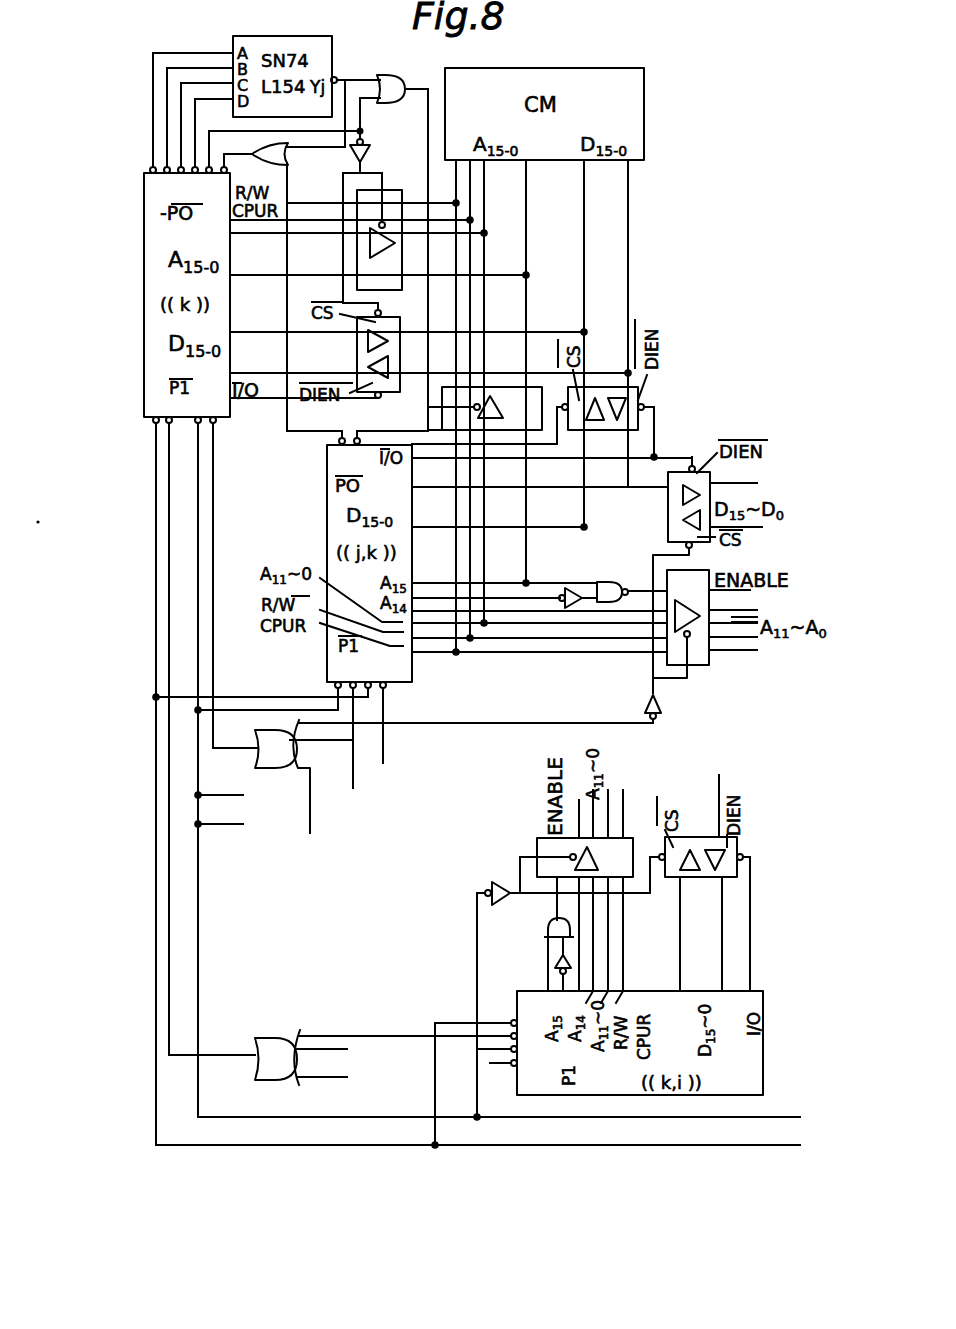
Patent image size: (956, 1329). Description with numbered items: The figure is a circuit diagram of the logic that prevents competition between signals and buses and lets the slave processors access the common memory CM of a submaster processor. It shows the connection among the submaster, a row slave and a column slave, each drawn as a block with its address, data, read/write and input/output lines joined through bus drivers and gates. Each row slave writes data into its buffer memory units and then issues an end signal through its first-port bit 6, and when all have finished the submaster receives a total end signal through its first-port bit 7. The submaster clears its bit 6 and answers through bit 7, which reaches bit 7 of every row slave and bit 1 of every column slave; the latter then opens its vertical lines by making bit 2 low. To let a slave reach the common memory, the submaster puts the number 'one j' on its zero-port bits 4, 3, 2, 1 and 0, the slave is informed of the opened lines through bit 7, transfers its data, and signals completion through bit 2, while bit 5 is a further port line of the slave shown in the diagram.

The port bit 0 is at (343, 618).
The port bit 1 is at (350, 611).
The port bit 2 is at (344, 604).
The port bit 3 is at (351, 598).
The port bit 4 is at (295, 427).
The port bit 5 is at (367, 674).
The port bit 6 is at (275, 542).
The port bit 7 is at (284, 427).